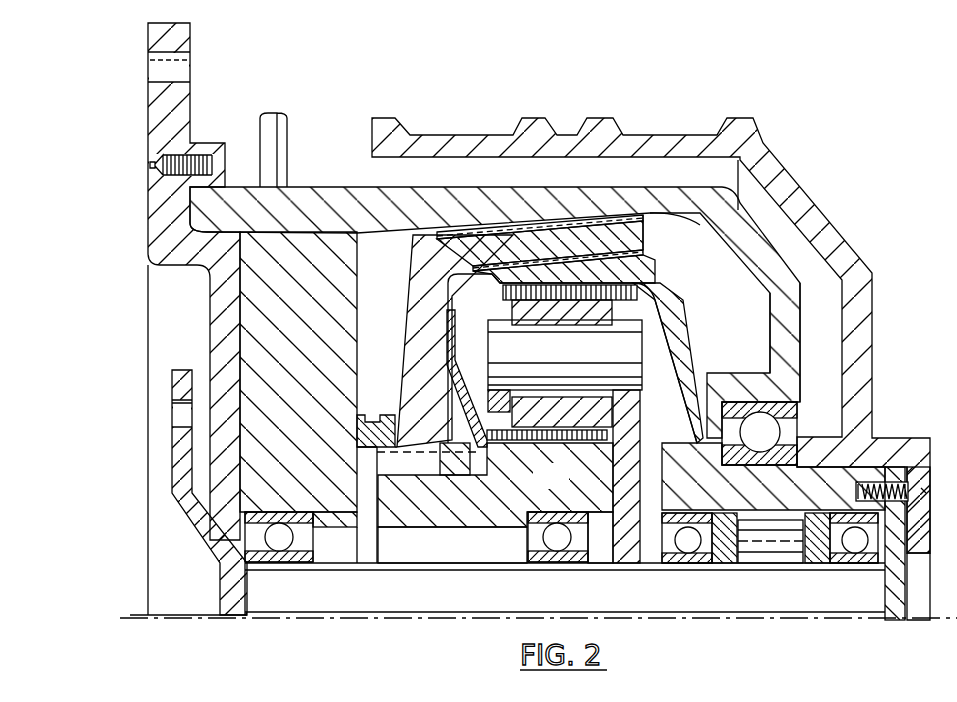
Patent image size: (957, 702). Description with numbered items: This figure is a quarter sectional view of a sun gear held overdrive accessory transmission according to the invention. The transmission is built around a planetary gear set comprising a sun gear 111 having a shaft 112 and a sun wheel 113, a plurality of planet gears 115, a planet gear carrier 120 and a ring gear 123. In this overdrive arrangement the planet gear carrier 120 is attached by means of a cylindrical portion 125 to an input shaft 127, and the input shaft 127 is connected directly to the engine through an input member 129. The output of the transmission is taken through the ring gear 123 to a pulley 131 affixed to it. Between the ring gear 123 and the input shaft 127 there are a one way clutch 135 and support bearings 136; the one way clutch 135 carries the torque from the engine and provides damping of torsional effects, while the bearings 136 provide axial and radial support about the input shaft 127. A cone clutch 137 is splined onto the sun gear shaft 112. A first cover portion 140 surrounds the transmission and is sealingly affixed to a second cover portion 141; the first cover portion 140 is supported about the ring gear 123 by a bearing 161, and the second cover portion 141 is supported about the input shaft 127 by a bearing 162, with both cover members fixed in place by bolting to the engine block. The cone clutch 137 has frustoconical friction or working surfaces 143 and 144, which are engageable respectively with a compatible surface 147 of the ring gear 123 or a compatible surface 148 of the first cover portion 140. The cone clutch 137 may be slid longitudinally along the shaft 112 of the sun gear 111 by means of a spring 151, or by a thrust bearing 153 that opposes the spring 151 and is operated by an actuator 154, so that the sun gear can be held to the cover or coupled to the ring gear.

The sun gear 111 is at (615, 555).
The shaft 112 is at (447, 500).
The sun wheel 113 is at (565, 489).
The planet gears 115 is at (668, 300).
The planet gear carrier 120 is at (630, 508).
The ring gear 123 is at (668, 345).
The cylindrical portion 125 is at (600, 565).
The input shaft 127 is at (322, 590).
The input member 129 is at (200, 518).
The pulley 131 is at (857, 372).
The one way clutch 135 is at (762, 555).
The support bearings 136 is at (690, 565).
The cone clutch 137 is at (430, 258).
The first cover portion 140 is at (740, 168).
The second cover portion 141 is at (160, 237).
The frustoconical working surface 143 is at (490, 278).
The frustoconical working surface 144 is at (628, 228).
The compatible surface of the ring gear 147 is at (575, 240).
The compatible surface of the cover 148 is at (690, 228).
The spring 151 is at (410, 345).
The thrust bearing 153 is at (370, 415).
The actuator 154 is at (245, 332).
The bearing 161 is at (780, 430).
The bearing 162 is at (278, 540).